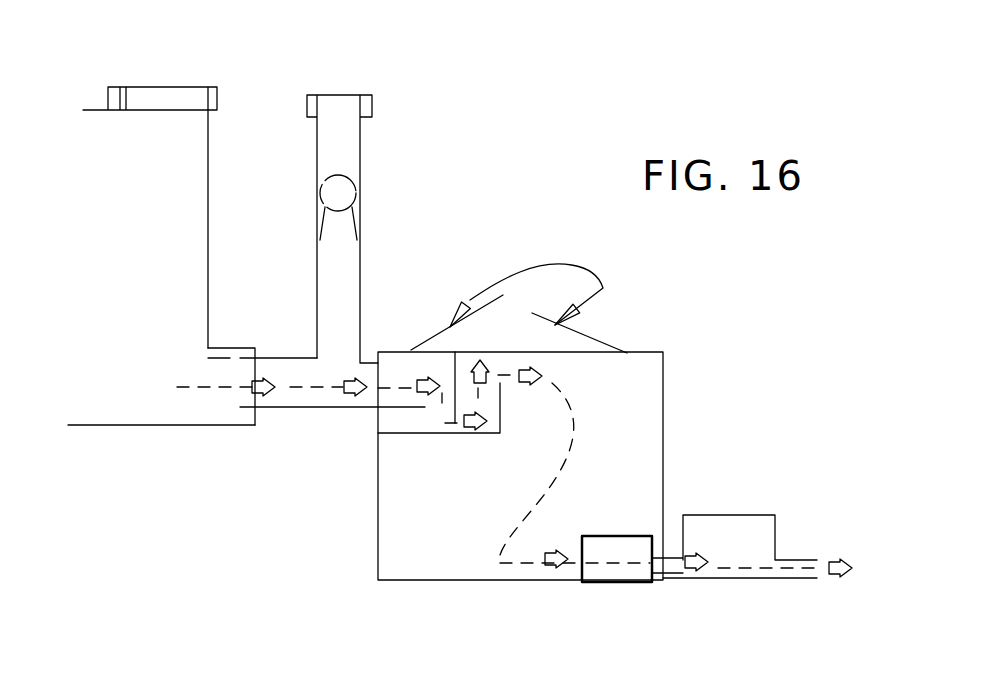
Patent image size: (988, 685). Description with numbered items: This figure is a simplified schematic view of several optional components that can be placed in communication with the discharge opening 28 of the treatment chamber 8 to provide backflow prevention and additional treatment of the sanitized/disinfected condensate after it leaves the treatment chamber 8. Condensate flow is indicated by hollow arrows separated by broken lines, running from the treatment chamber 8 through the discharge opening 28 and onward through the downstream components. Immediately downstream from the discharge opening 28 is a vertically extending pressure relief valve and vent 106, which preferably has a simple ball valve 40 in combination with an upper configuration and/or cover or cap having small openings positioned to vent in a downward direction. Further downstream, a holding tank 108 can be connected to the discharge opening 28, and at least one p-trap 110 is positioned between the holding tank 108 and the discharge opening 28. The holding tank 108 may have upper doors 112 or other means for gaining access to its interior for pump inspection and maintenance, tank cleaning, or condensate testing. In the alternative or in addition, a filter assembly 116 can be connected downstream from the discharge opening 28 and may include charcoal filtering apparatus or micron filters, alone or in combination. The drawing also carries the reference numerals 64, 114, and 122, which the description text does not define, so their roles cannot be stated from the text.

The treatment chamber 8 is at (97, 362).
The discharge opening 28 is at (230, 378).
The ball valve 40 is at (333, 193).
The supply pipe 64 is at (108, 107).
The pressure relief valve and vent 106 is at (347, 143).
The holding tank 108 is at (448, 527).
The p-trap 110 is at (447, 417).
The upper doors 112 is at (545, 308).
The outlet unit 114 is at (612, 556).
The filter assembly 116 is at (742, 540).
The line 122 is at (658, 16).